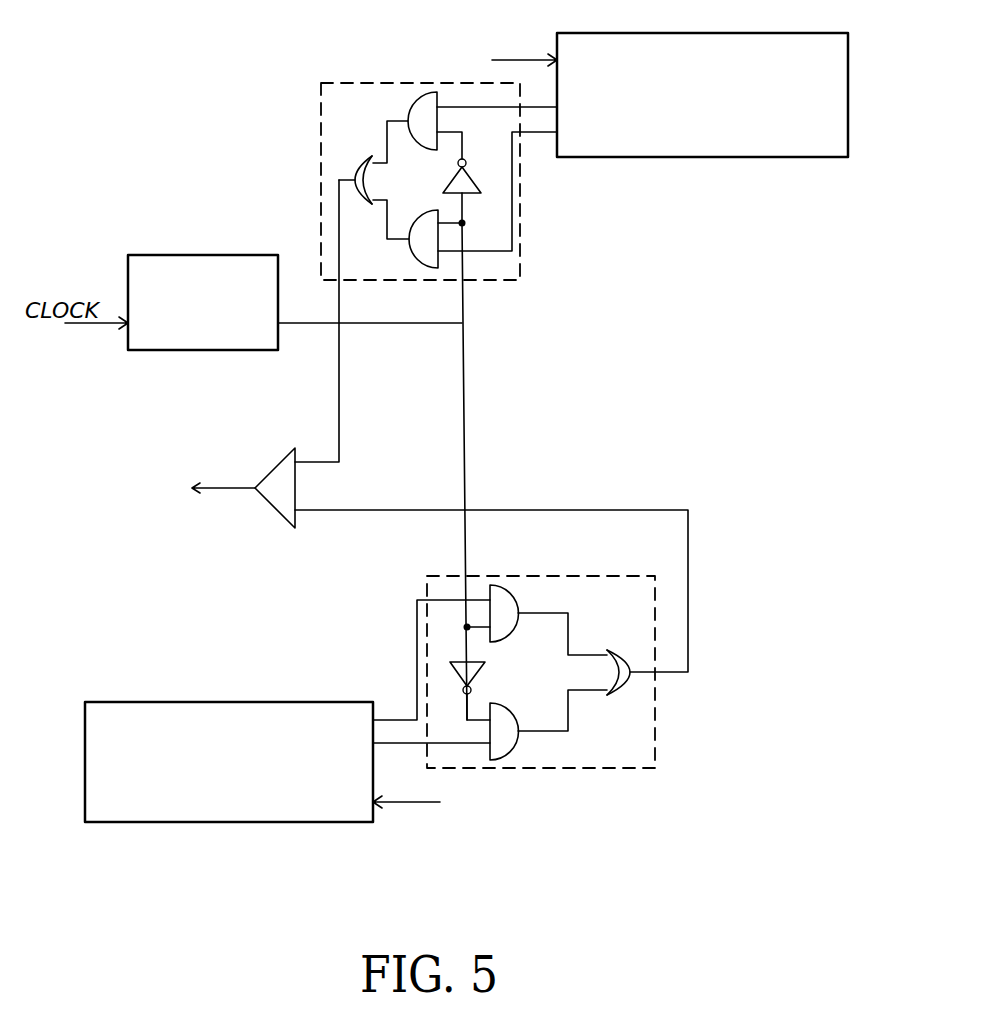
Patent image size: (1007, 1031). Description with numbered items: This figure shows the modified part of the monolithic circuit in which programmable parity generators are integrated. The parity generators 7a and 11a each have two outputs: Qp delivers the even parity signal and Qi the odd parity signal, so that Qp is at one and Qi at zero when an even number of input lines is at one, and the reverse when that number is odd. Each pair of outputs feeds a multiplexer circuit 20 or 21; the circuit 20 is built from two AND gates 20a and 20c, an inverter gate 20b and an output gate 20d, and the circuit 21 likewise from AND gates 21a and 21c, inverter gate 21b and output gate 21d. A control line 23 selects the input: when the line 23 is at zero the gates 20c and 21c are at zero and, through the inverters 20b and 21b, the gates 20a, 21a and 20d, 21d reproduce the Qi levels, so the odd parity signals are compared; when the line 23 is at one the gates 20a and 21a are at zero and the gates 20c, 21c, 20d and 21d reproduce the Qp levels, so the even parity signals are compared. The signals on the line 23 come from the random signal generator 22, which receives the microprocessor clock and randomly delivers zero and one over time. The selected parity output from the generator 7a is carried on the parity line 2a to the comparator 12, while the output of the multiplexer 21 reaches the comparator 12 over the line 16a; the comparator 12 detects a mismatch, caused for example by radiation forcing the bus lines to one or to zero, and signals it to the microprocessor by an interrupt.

The parity generator 7a is at (702, 95).
The parity generator 11a is at (229, 762).
The random signal generator 22 is at (198, 255).
The comparator 12 is at (262, 504).
The multiplexer circuit 20 is at (321, 85).
The AND gate 20a is at (426, 107).
The inverter gate 20b is at (481, 183).
The AND gate 20c is at (426, 256).
The OR gate 20d is at (355, 178).
The multiplexer circuit 21 is at (656, 766).
The AND gate 21a is at (505, 742).
The inverter gate 21b is at (450, 663).
The AND gate 21c is at (505, 606).
The OR gate 21d is at (634, 688).
The parity line 2a is at (340, 366).
The control line 23 is at (465, 422).
The signal line 16a is at (371, 510).